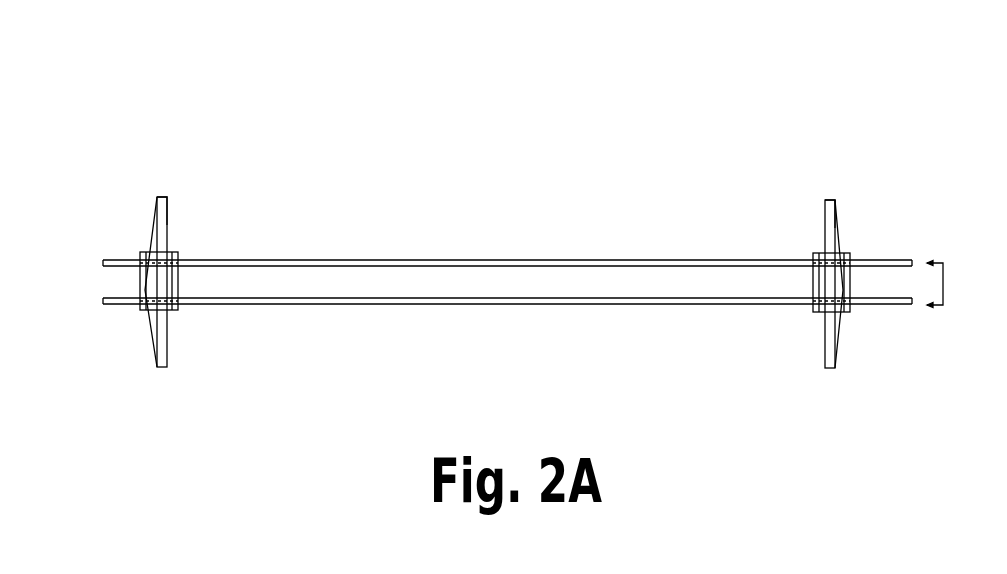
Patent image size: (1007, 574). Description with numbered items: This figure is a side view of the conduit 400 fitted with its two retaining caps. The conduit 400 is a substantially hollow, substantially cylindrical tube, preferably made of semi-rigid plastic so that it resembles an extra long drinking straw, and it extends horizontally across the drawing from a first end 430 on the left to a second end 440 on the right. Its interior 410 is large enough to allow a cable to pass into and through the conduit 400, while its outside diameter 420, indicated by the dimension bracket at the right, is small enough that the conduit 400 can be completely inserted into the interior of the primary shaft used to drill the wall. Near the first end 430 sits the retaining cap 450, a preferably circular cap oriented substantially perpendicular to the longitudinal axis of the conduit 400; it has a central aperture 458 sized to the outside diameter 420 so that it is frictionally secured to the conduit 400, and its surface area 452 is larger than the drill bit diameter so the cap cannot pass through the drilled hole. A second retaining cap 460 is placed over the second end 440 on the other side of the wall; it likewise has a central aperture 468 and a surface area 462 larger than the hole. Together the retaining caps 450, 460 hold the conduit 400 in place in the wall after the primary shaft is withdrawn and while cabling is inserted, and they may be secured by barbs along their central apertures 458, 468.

The conduit 400 is at (423, 260).
The interior 410 is at (583, 278).
The outside diameter 420 is at (959, 284).
The first end 430 is at (113, 259).
The second end 440 is at (856, 261).
The retaining cap 450 is at (158, 367).
The surface area 452 is at (164, 216).
The central aperture 458 is at (160, 287).
The second retaining cap 460 is at (828, 368).
The surface area 462 is at (826, 223).
The central aperture 468 is at (830, 285).